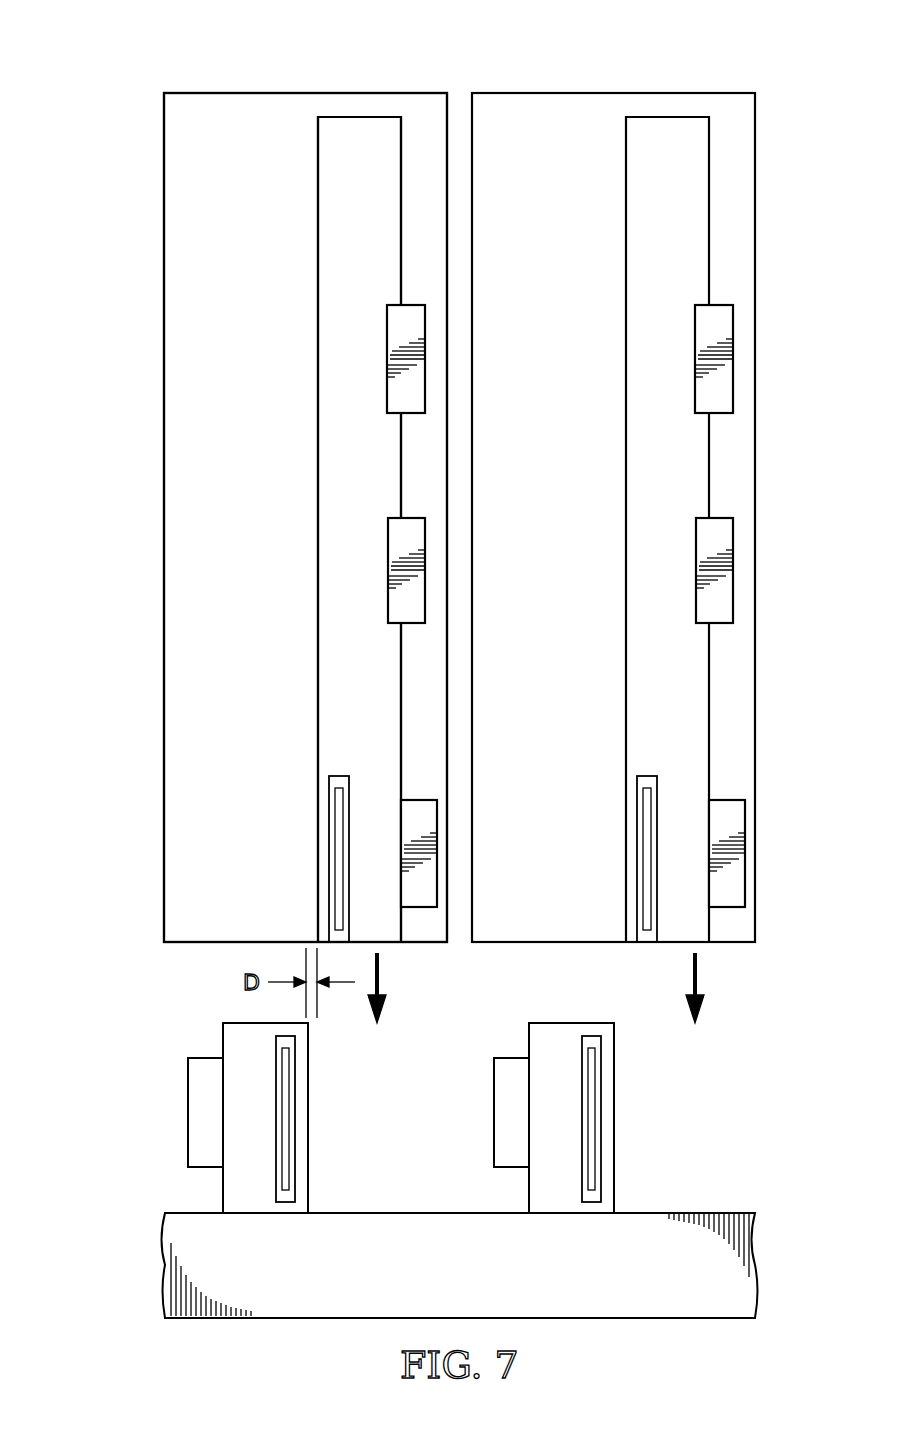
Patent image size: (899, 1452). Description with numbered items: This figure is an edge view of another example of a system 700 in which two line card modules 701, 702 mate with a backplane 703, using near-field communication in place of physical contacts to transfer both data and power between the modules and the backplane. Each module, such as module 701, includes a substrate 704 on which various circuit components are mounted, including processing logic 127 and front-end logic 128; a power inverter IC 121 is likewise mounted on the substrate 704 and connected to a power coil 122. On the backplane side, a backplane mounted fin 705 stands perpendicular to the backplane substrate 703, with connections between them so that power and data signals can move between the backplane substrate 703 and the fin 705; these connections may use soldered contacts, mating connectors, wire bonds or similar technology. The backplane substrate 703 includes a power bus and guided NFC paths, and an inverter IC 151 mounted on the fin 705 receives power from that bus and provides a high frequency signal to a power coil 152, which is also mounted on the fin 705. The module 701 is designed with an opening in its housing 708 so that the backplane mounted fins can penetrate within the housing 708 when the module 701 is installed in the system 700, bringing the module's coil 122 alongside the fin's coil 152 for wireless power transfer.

The system 700 is at (100, 68).
The module 701 is at (308, 93).
The module 702 is at (612, 93).
The backplane 703 is at (297, 1318).
The substrate 704 is at (318, 402).
The backplane mounted fin 705 is at (223, 1040).
The housing 708 is at (164, 705).
The power inverter IC 121 is at (401, 800).
The power coil 122 is at (329, 862).
The processing logic 127 is at (388, 537).
The front-end logic 128 is at (388, 322).
The inverter IC 151 is at (188, 1113).
The power coil 152 is at (295, 1118).